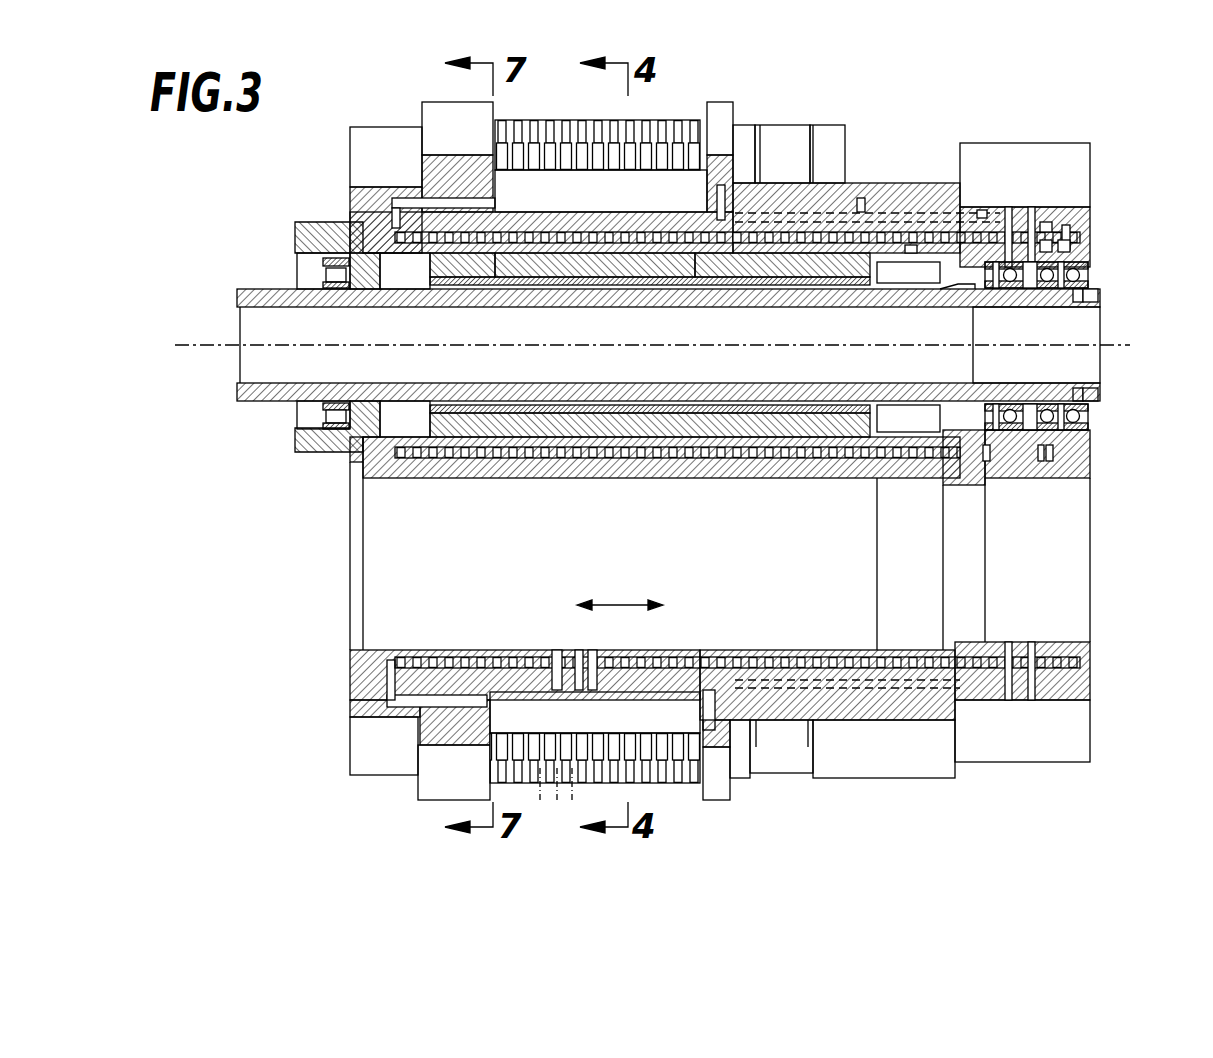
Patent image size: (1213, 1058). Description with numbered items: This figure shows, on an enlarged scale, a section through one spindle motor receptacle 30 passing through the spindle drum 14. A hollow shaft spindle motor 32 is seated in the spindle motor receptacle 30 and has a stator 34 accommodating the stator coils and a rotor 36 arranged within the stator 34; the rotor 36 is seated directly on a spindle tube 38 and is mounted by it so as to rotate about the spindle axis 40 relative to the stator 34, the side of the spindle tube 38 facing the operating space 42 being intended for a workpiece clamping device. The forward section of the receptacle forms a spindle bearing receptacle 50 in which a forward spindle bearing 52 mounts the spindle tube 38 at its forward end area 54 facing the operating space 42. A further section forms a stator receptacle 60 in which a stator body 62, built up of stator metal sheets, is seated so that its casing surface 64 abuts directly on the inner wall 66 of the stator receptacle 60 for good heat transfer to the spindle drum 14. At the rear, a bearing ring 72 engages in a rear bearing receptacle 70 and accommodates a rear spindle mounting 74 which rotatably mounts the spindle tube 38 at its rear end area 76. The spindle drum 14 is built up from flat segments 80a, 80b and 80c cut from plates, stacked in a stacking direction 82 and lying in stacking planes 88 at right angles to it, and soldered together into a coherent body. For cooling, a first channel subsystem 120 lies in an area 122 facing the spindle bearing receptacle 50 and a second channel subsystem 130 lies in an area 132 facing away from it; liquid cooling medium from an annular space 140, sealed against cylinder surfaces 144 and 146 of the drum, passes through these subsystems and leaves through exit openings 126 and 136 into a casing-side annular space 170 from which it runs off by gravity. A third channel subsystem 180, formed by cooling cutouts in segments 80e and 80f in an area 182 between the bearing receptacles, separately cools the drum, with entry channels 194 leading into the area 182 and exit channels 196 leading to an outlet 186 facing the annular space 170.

The spindle drum 14 is at (1022, 185).
The spindle motor receptacle 30 is at (773, 425).
The spindle motor 32 is at (548, 432).
The stator 34 is at (747, 268).
The rotor 36 is at (663, 413).
The spindle tube 38 is at (1062, 298).
The spindle axis 40 is at (200, 347).
The operating space 42 is at (1181, 486).
The spindle bearing receptacle 50 is at (1010, 275).
The forward spindle bearing 52 is at (1084, 271).
The forward end area 54 is at (1084, 394).
The stator receptacle 60 is at (668, 255).
The stator body 62 is at (527, 263).
The casing surface 64 is at (617, 250).
The inner wall 66 is at (712, 267).
The rear bearing receptacle 70 is at (362, 250).
The bearing ring 72 is at (302, 235).
The rear spindle mounting 74 is at (332, 276).
The rear end area 76 is at (335, 396).
The segment 80a is at (553, 690).
The segment 80b is at (579, 690).
The segment 80c is at (593, 690).
The segment 80e is at (1006, 700).
The segment 80f is at (1031, 700).
The stacking direction 82 is at (618, 603).
The stacking planes 88 is at (576, 792).
The first channel subsystem 120 is at (862, 233).
The area 122 is at (910, 253).
The exit opening 126 is at (708, 177).
The second channel subsystem 130 is at (440, 237).
The area 132 is at (573, 230).
The exit opening 136 is at (496, 187).
The annular space 140 is at (788, 145).
The cylinder surface 144 is at (747, 135).
The cylinder surface 146 is at (827, 137).
The annular space 170 is at (542, 144).
The third channel subsystem 180 is at (1081, 225).
The area 182 is at (1083, 243).
The outlet 186 is at (708, 203).
The entry channels 194 is at (972, 212).
The exit channels 196 is at (1072, 228).